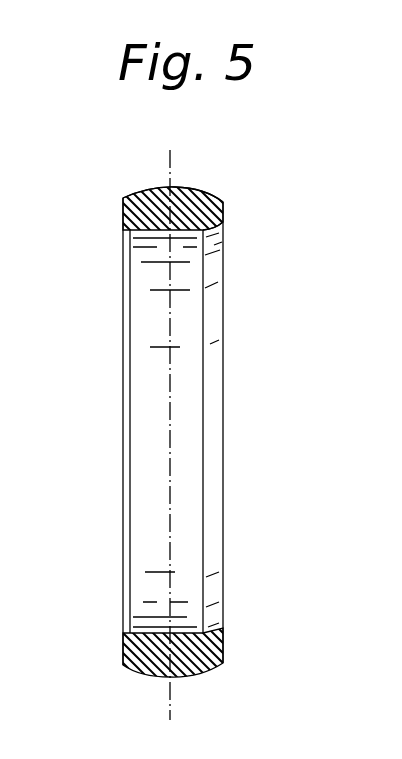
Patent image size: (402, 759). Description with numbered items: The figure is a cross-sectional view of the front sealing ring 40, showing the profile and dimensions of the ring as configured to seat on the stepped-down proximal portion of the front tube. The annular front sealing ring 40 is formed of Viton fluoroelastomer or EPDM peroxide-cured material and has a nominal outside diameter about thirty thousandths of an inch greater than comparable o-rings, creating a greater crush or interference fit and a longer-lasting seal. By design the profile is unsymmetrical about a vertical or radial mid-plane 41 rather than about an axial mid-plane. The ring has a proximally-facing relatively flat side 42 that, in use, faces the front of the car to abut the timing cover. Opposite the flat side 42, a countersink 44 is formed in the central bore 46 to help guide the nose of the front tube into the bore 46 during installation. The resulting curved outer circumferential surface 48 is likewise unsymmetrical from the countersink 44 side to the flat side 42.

The front sealing ring 40 is at (267, 215).
The vertical or radial mid-plane 41 is at (168, 703).
The flat side 42 is at (123, 209).
The countersink 44 is at (223, 226).
The central bore 46 is at (190, 232).
The curved outer circumferential surface 48 is at (140, 193).